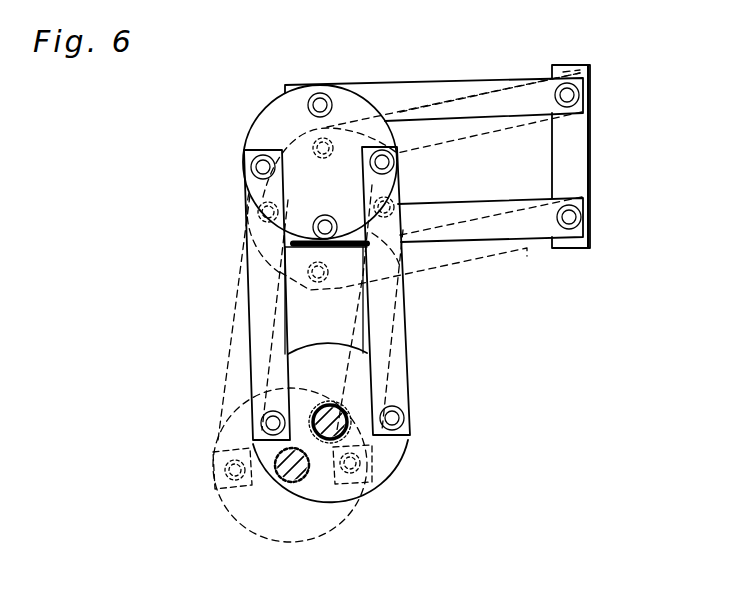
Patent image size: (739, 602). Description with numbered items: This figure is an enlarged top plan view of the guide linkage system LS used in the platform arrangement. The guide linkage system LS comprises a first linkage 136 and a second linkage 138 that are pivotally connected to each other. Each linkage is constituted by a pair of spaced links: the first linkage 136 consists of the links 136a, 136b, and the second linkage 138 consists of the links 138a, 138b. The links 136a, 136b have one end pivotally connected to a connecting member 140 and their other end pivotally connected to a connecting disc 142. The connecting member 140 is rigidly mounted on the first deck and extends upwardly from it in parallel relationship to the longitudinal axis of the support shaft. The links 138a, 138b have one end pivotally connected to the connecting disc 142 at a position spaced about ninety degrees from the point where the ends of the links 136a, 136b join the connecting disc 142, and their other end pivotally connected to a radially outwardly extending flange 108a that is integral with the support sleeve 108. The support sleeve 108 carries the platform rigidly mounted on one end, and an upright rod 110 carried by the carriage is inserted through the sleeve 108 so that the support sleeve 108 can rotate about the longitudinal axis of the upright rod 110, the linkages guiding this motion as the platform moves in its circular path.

The support sleeve 108 is at (347, 427).
The radially outwardly extending flange 108a is at (390, 470).
The upright rod 110 is at (330, 428).
The first linkage 136 is at (527, 250).
The link 136a is at (408, 88).
The link 136b is at (488, 236).
The second linkage 138 is at (238, 364).
The link 138a is at (267, 307).
The link 138b is at (407, 353).
The connecting member 140 is at (572, 155).
The connecting disc 142 is at (272, 118).
The guide linkage system LS is at (424, 396).